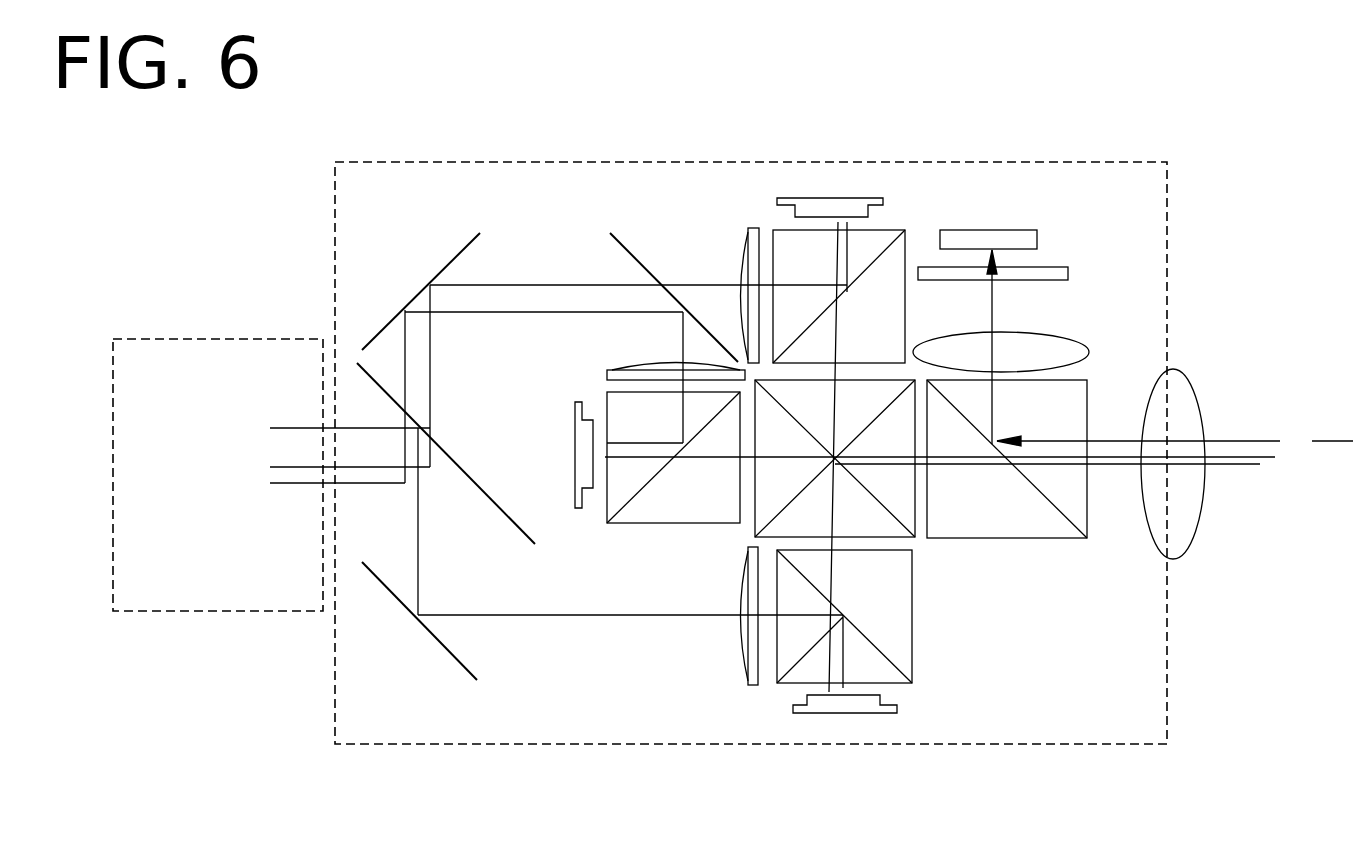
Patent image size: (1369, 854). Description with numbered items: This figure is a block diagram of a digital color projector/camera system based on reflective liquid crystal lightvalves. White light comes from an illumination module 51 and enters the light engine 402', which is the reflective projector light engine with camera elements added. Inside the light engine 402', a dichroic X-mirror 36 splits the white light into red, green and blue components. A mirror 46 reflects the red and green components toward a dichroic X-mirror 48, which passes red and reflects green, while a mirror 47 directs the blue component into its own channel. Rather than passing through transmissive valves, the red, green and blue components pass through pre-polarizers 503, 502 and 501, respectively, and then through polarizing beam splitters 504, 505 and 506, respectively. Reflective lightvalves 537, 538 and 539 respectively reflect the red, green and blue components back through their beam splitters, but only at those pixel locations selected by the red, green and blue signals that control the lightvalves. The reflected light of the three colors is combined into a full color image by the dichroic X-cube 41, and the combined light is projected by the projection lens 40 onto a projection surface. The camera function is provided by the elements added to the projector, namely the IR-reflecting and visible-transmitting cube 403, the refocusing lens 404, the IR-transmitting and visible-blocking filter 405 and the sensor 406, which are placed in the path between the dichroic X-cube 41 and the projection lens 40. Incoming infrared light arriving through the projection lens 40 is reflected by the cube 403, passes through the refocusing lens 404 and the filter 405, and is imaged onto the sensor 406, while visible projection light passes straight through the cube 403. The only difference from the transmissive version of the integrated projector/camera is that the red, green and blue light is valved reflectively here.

The light engine 402' is at (751, 410).
The illumination module 51 is at (113, 355).
The mirror 46 is at (427, 284).
The dichroic X-mirror 36 is at (487, 493).
The mirror 47 is at (445, 647).
The dichroic X-mirror 48 is at (640, 262).
The pre-polarizer 502 is at (607, 368).
The pre-polarizer 503 is at (743, 232).
The pre-polarizer 501 is at (738, 658).
The lightvalve 538 is at (578, 508).
The polarizing beam splitter 505 is at (668, 523).
The polarizing beam splitter 504 is at (905, 308).
The dichroic X-cube 41 is at (908, 537).
The polarizing beam splitter 506 is at (912, 638).
The IR-reflecting and visible-transmitting cube 403 is at (1065, 540).
The lightvalve 537 is at (883, 203).
The lightvalve 539 is at (793, 707).
The sensor 406 is at (1037, 238).
The IR-transmitting and visible-blocking filter 405 is at (1068, 273).
The refocusing lens 404 is at (1055, 335).
The projection lens 40 is at (1207, 493).